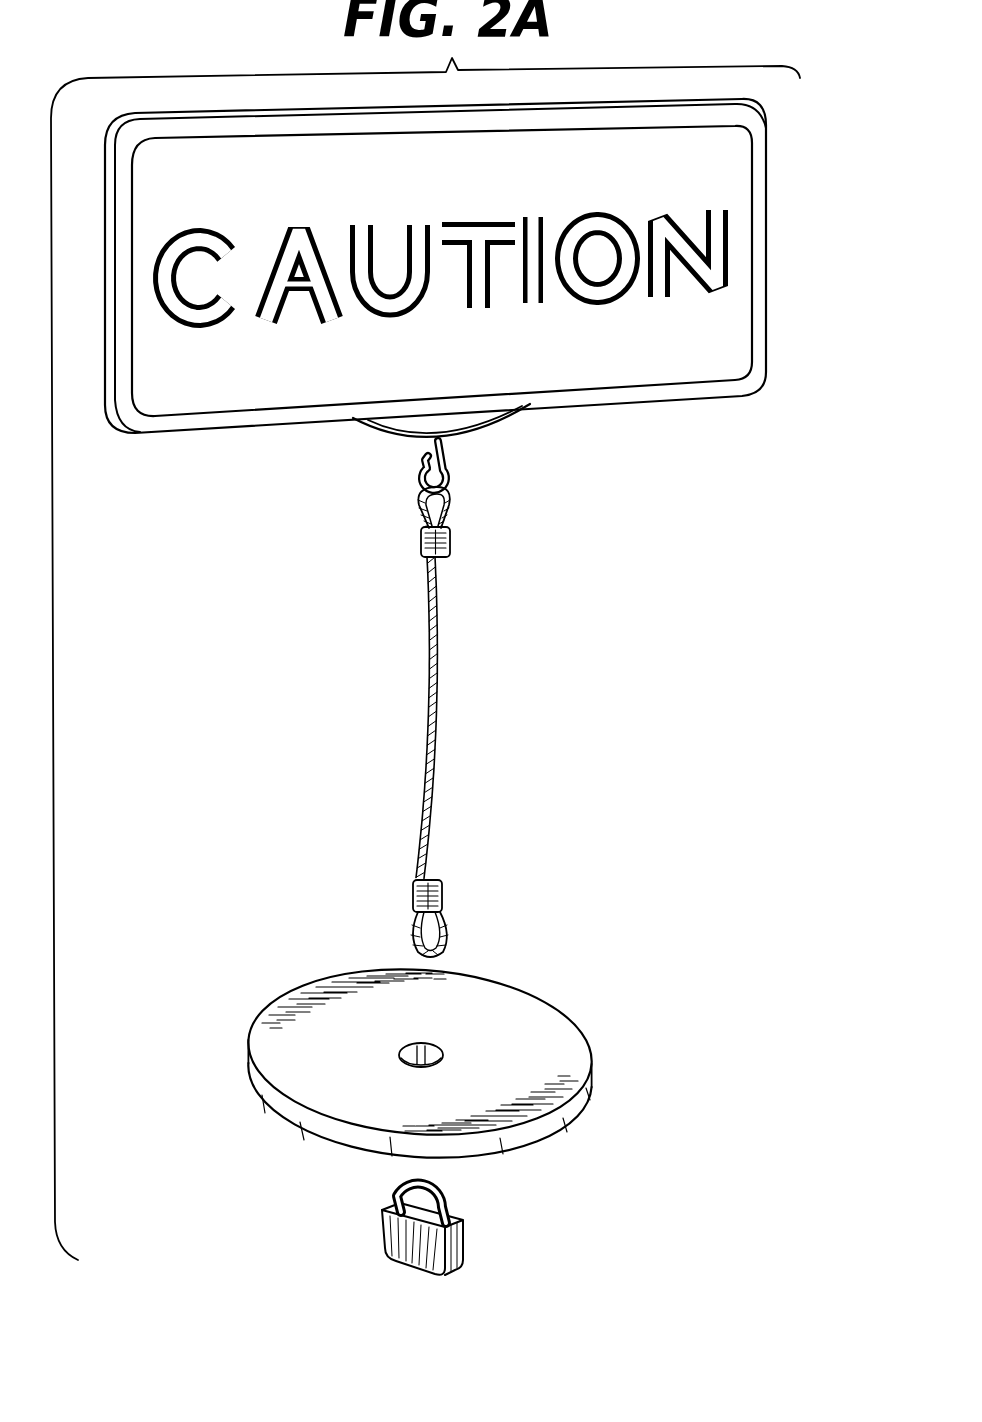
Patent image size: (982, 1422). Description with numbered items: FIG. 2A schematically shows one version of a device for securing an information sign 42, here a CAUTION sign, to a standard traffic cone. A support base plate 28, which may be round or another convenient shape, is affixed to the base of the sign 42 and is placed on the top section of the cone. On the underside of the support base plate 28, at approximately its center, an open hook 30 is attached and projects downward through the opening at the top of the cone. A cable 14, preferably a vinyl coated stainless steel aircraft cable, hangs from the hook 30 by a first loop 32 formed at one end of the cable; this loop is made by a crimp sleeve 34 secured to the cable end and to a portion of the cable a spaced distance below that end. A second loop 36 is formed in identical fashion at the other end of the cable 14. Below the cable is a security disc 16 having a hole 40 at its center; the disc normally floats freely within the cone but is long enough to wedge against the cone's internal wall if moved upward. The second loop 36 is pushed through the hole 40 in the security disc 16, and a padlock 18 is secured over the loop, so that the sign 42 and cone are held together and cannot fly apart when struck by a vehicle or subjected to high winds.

The cable 14 is at (440, 742).
The security disc 16 is at (550, 1027).
The padlock 18 is at (460, 1243).
The support base plate 28 is at (483, 437).
The hook 30 is at (418, 478).
The first loop 32 is at (450, 503).
The crimp sleeve 34 is at (419, 537).
The second loop 36 is at (412, 933).
The hole 40 is at (431, 1047).
The information sign 42 is at (758, 182).